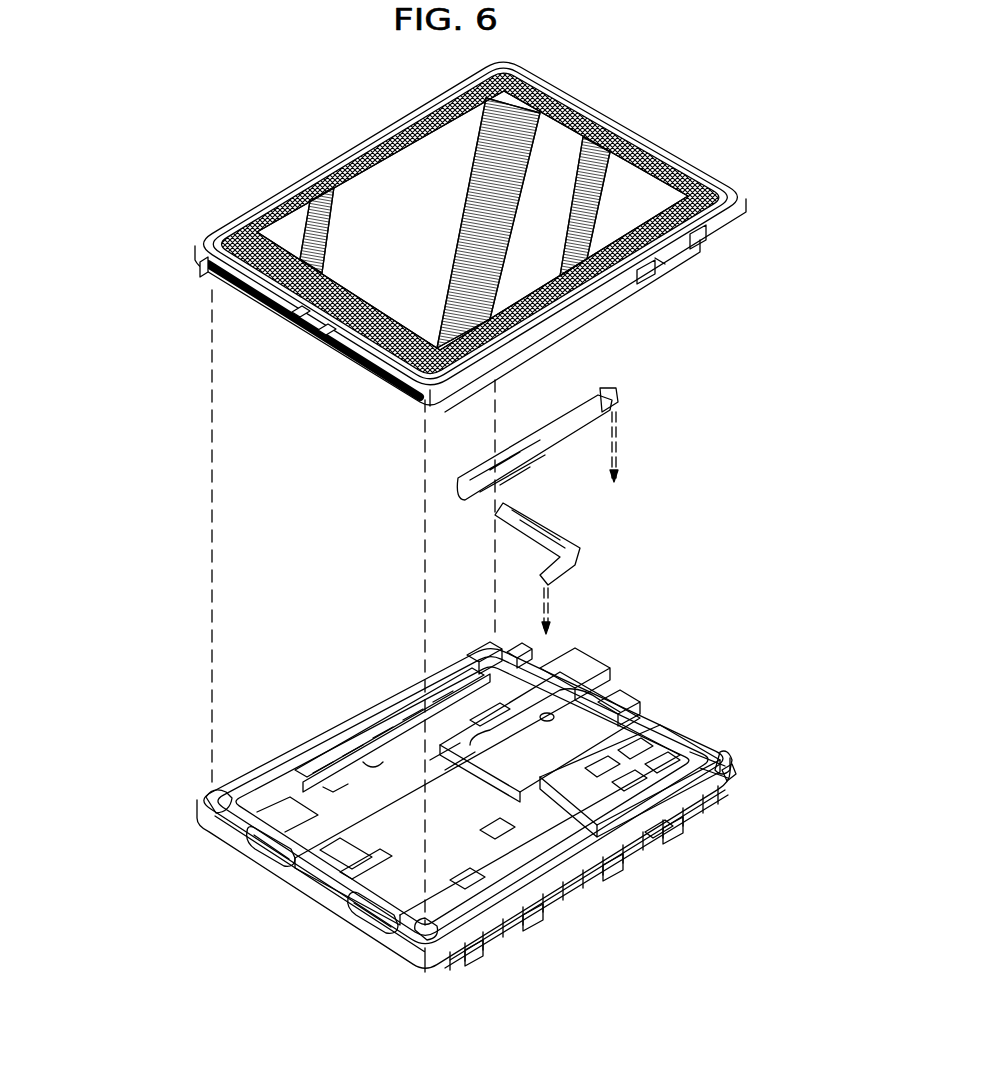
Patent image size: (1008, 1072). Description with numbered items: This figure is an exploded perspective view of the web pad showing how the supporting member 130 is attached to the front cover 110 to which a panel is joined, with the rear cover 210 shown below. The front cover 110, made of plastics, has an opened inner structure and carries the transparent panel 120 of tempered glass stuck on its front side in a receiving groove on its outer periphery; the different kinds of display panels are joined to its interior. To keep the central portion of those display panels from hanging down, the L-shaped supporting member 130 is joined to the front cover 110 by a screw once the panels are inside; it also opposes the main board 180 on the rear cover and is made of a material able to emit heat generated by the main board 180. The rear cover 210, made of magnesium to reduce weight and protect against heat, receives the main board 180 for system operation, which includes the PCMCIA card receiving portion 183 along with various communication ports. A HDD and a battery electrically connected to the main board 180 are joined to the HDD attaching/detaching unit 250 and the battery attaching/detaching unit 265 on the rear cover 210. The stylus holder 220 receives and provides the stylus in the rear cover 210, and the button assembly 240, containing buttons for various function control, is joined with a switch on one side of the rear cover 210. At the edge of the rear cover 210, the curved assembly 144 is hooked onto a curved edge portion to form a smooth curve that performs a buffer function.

The front cover 110 is at (194, 243).
The transparent panel 120 is at (381, 177).
The supporting member 130 is at (573, 428).
The fourth curved assembly 144 is at (735, 780).
The main board 180 is at (556, 700).
The PCMCIA card receiving portion 183 is at (655, 755).
The rear cover 210 is at (165, 842).
The stylus holder 220 is at (727, 763).
The button assembly 240 is at (665, 830).
The HDD attaching/detaching unit 250 is at (337, 770).
The battery attaching/detaching unit 265 is at (507, 883).